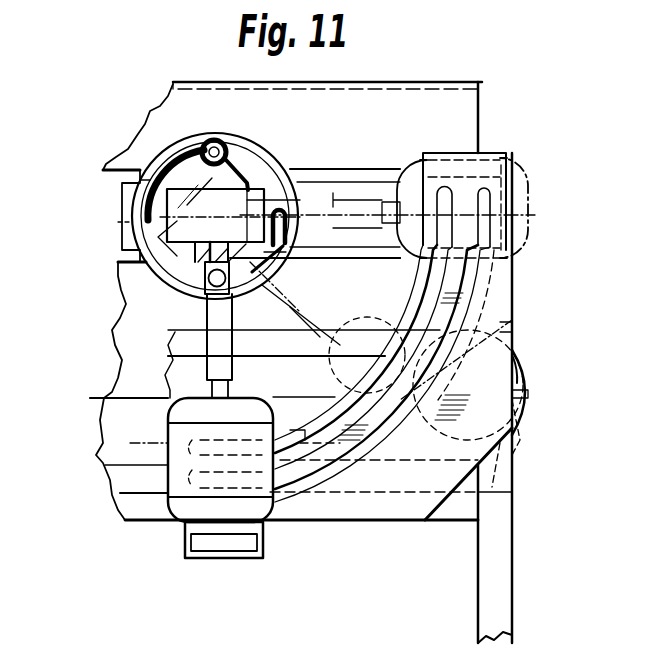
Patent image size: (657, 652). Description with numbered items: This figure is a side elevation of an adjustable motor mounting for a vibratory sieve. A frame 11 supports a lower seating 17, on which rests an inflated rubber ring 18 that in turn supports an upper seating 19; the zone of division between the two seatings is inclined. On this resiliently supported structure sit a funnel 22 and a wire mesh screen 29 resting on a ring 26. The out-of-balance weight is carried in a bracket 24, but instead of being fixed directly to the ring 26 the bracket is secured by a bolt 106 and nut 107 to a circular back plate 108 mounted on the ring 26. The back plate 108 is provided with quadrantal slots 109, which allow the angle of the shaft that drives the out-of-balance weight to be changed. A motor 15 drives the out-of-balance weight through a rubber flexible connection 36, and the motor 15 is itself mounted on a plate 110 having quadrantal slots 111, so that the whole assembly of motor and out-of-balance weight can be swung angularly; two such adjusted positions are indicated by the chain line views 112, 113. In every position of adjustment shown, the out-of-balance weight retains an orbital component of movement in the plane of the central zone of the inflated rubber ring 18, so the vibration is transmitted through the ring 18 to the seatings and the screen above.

The frame 11 is at (490, 588).
The motor 15 is at (183, 473).
The lower seating 17 is at (508, 442).
The inflated rubber ring 18 is at (514, 368).
The upper seating 19 is at (500, 325).
The funnel 22 is at (127, 284).
The bracket 24 is at (213, 200).
The ring 26 is at (130, 178).
The wire mesh screen 29 is at (387, 196).
The rubber flexible connection 36 is at (210, 310).
The bolt 106 is at (213, 140).
The nut 107 is at (200, 143).
The circular back plate 108 is at (258, 160).
The quadrantal slots 109 is at (150, 178).
The plate 110 is at (358, 480).
The quadrantal slots 111 is at (305, 430).
The chain line view 112 is at (318, 302).
The chain line view 113 is at (360, 198).